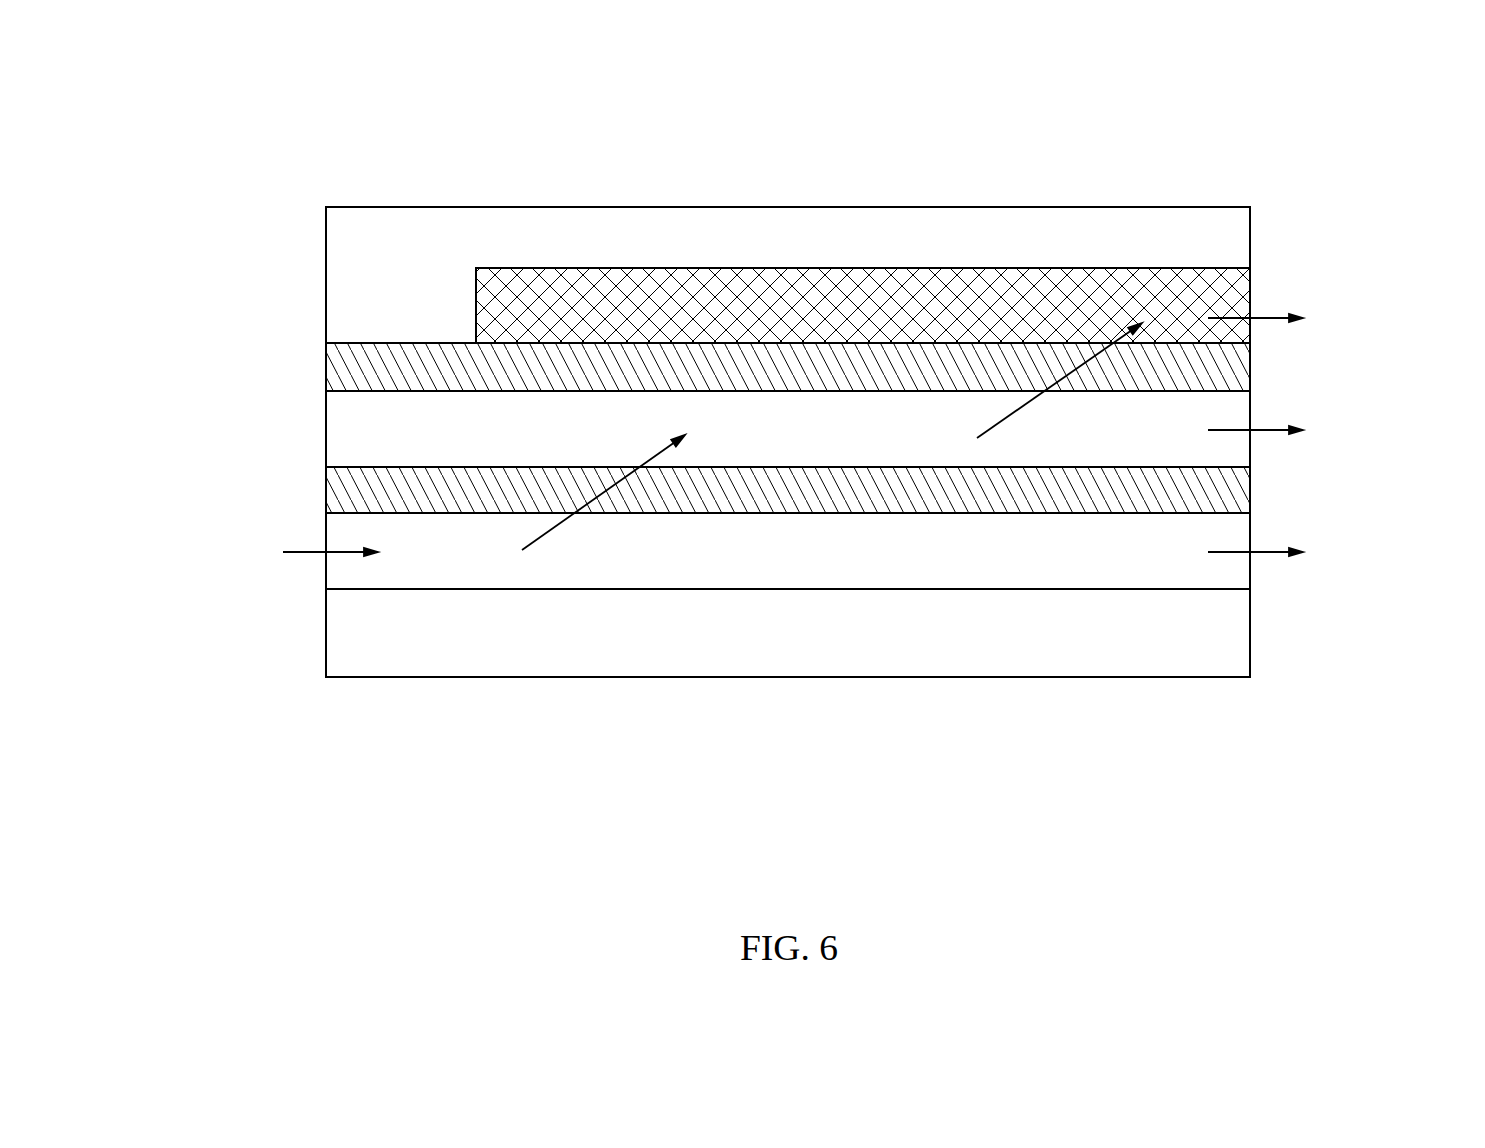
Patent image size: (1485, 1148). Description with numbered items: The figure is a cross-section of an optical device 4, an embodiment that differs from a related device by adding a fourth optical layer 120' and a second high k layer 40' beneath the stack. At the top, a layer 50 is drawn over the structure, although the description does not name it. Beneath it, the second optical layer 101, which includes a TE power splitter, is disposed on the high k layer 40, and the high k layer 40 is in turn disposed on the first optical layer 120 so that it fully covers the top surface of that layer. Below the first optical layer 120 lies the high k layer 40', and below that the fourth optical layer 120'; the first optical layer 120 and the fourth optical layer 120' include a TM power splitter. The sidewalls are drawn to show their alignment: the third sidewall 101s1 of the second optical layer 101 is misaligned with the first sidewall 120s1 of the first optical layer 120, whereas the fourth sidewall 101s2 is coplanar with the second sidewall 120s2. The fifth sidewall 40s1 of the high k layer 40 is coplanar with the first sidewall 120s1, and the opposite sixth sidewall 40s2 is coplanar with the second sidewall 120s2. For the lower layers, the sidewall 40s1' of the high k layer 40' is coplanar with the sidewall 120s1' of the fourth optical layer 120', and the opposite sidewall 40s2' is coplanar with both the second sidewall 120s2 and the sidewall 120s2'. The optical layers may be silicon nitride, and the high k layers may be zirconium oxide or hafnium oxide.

The optical device 4 is at (182, 89).
The dielectric layer 50 is at (365, 228).
The second optical layer 101 is at (570, 323).
The high k layer 40 is at (788, 257).
The first optical layer 120 is at (788, 295).
The high k layer 40' is at (788, 318).
The fourth optical layer 120' is at (788, 356).
The third sidewall 101s1 is at (476, 290).
The fourth sidewall 101s2 is at (1250, 287).
The fifth sidewall 40s1 is at (240, 366).
The sixth sidewall 40s2 is at (1338, 366).
The first sidewall 120s1 is at (234, 427).
The second sidewall 120s2 is at (1343, 428).
The sidewall 40s1' is at (236, 488).
The sidewall 40s2' is at (1341, 488).
The sidewall 120s1' is at (229, 549).
The sidewall 120s2' is at (1347, 550).